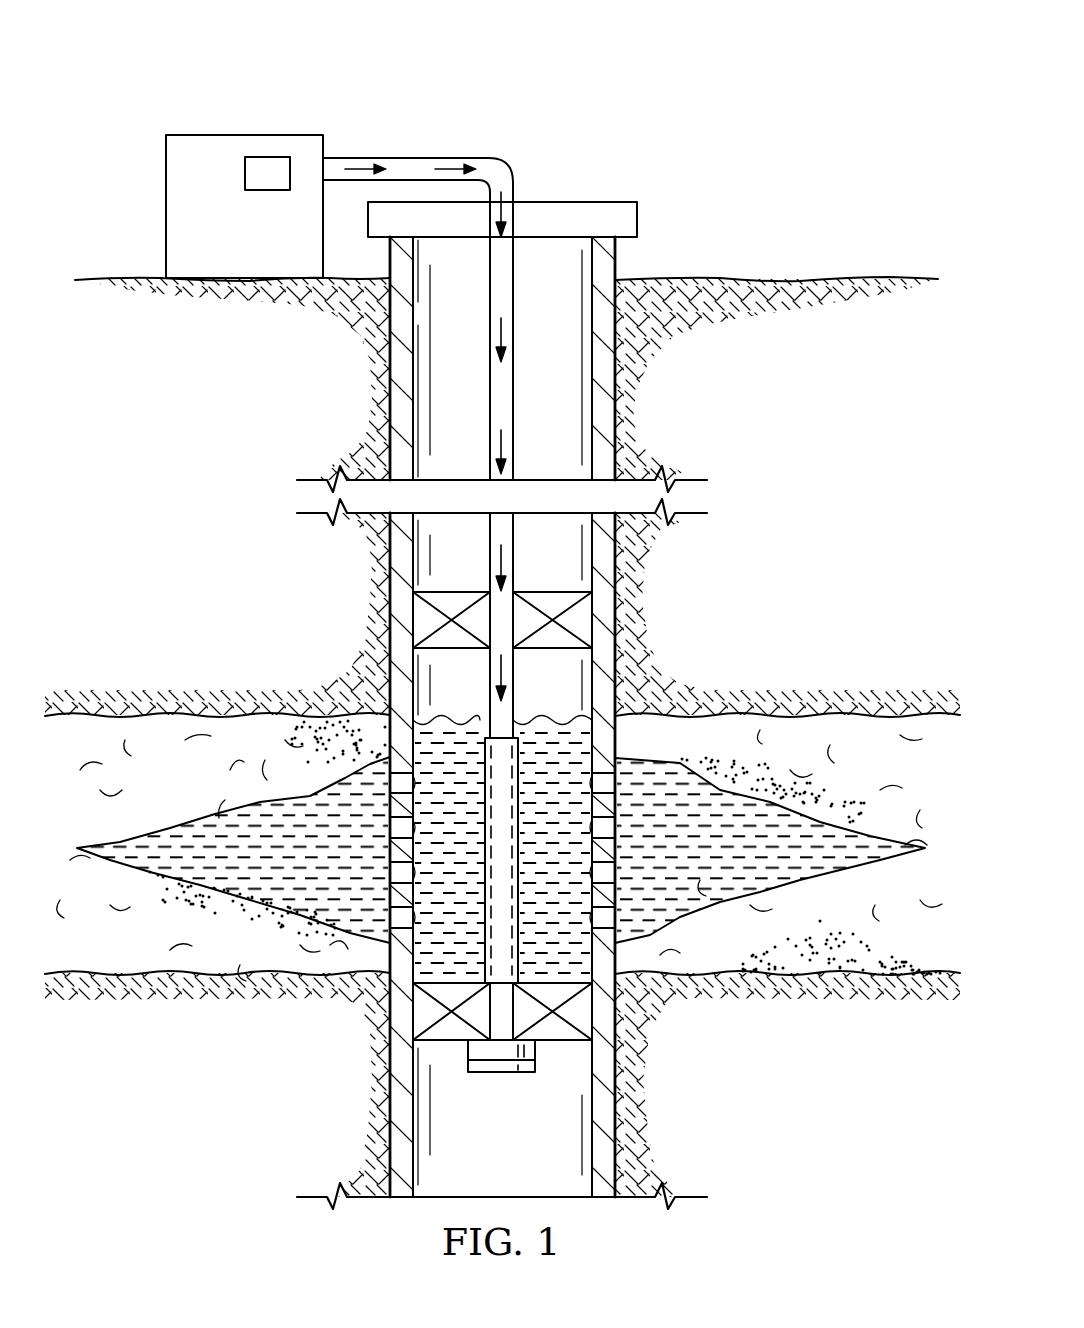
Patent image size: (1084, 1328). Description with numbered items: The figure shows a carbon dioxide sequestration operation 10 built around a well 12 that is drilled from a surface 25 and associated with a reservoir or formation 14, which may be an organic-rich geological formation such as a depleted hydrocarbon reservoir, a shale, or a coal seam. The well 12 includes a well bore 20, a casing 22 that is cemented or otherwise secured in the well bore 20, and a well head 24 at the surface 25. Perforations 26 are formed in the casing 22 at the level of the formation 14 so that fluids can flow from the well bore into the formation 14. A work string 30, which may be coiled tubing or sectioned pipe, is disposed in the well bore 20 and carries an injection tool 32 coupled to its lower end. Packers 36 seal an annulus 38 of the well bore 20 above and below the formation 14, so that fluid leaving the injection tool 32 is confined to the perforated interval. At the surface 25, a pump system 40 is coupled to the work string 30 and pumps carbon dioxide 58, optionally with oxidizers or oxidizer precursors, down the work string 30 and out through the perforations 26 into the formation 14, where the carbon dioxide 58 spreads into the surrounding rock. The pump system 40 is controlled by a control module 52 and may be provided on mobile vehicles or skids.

The carbon dioxide sequestration operation 10 is at (658, 57).
The well 12 is at (572, 144).
The formation 14 is at (895, 788).
The well bore 20 is at (594, 309).
The casing 22 is at (412, 306).
The well head 24 is at (637, 221).
The surface 25 is at (690, 278).
The perforations 26 is at (393, 780).
The work string 30 is at (513, 560).
The injection tool 32 is at (518, 866).
The packers 36 is at (557, 652).
The annulus 38 is at (537, 395).
The pump system 40 is at (245, 133).
The control module 52 is at (265, 192).
The carbon dioxide 58 is at (450, 158).